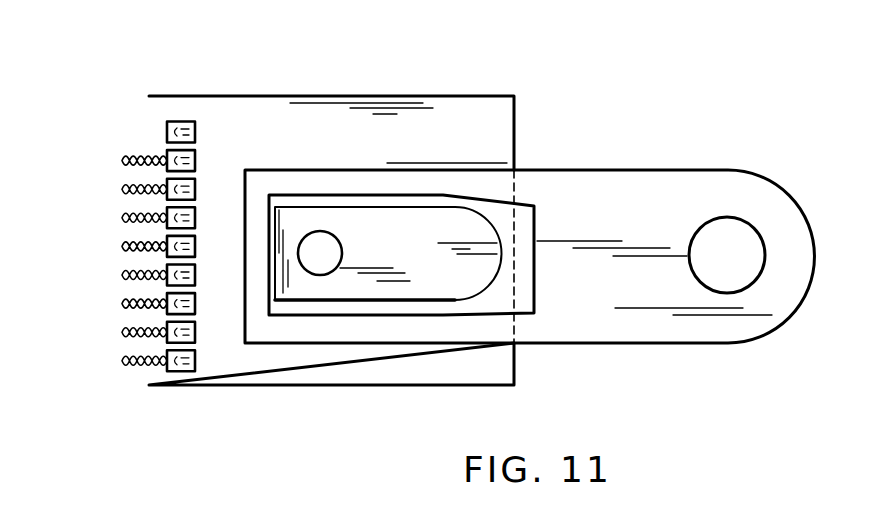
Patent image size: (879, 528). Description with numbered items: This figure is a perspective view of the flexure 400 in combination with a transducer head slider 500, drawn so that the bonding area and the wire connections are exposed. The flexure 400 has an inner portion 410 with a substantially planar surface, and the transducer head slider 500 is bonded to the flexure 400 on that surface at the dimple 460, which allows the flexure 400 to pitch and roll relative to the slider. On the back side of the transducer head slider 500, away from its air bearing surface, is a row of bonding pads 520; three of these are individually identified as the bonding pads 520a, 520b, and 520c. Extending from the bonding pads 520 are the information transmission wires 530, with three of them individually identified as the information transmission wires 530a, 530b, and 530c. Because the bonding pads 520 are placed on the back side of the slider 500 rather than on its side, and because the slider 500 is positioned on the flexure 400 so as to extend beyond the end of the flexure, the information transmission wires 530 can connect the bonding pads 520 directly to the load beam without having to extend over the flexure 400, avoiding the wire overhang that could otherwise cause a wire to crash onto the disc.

The flexure 400 is at (661, 169).
The inner portion 410 is at (432, 232).
The dimple 460 is at (313, 277).
The transducer head slider 500 is at (415, 387).
The bonding pads 520 is at (213, 207).
The bonding pad 520a is at (196, 131).
The bonding pad 520b is at (196, 157).
The bonding pad 520c is at (196, 187).
The information transmission wires 530 is at (101, 282).
The information transmission wire 530a is at (137, 363).
The information transmission wire 530b is at (128, 336).
The information transmission wire 530c is at (123, 300).